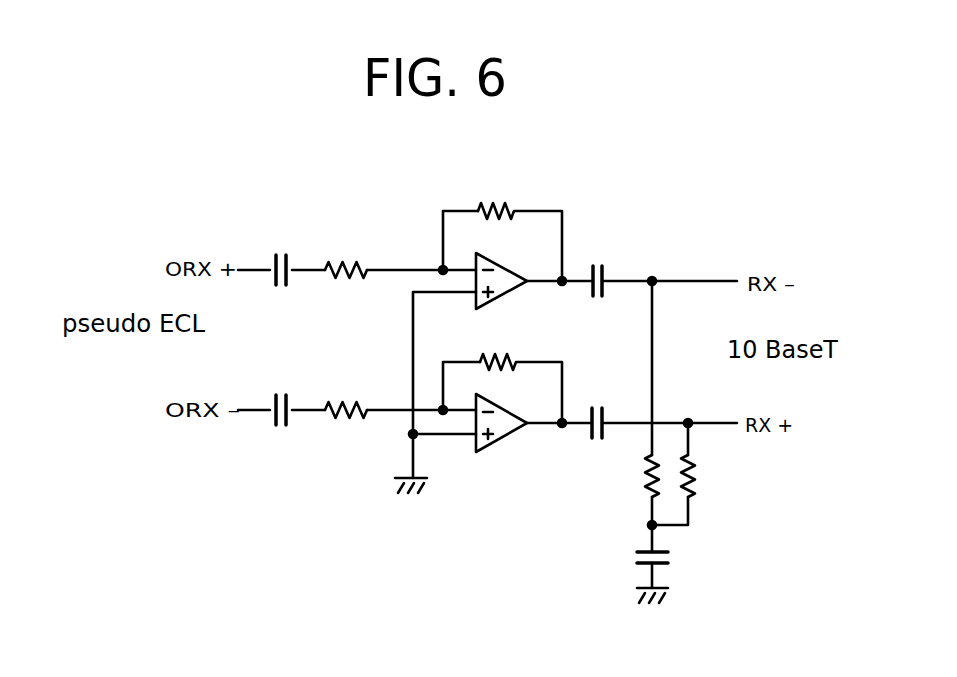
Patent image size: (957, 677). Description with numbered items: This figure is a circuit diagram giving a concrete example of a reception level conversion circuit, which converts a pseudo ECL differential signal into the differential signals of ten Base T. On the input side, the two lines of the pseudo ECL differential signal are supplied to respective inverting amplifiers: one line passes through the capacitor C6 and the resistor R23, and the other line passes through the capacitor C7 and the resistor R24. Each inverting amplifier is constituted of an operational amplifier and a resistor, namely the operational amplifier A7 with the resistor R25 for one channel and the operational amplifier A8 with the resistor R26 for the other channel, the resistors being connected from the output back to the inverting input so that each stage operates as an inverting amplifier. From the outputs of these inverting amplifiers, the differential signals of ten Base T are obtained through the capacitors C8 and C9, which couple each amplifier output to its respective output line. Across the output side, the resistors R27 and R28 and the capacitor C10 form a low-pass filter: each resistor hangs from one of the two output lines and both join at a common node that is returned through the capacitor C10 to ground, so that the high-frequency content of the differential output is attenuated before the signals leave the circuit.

The capacitor C6 is at (282, 290).
The capacitor C7 is at (282, 430).
The resistor R23 is at (347, 262).
The resistor R24 is at (346, 402).
The resistor R25 is at (505, 211).
The resistor R26 is at (494, 357).
The operational amplifier A7 is at (510, 273).
The operational amplifier A8 is at (500, 437).
The capacitor C8 is at (598, 264).
The capacitor C9 is at (596, 405).
The resistor R27 is at (644, 477).
The resistor R28 is at (696, 479).
The capacitor C10 is at (670, 557).